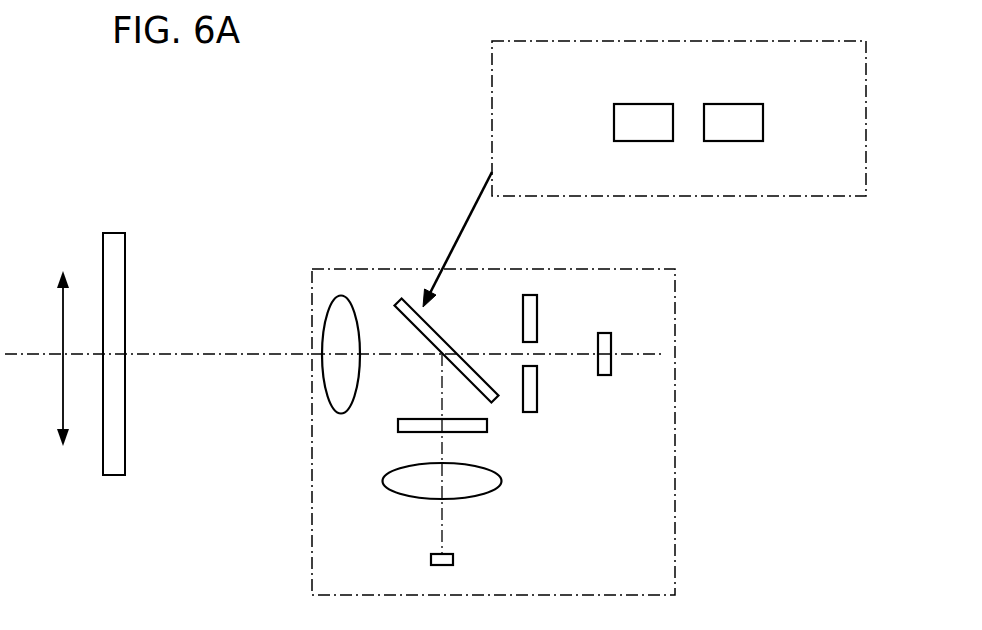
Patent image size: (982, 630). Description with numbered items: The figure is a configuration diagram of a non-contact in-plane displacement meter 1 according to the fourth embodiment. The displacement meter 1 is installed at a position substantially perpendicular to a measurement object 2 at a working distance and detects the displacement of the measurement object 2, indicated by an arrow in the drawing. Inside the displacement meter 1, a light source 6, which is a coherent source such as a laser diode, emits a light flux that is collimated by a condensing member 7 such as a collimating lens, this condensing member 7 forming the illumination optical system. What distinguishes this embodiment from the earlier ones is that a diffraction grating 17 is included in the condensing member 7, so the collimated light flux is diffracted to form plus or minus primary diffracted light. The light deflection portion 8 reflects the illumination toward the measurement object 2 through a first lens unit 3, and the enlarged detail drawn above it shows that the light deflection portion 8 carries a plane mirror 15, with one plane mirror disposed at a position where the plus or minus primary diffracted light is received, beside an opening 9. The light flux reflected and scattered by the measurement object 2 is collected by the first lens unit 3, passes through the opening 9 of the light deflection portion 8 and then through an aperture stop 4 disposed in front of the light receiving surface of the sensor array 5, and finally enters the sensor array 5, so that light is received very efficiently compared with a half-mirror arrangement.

The displacement meter 1 is at (676, 433).
The measurement object 2 is at (102, 253).
The first lens unit 3 is at (348, 297).
The aperture stop 4 is at (537, 307).
The sensor array 5 is at (602, 333).
The light source 6 is at (455, 557).
The condensing member 7 is at (501, 481).
The light deflection portion 8 is at (414, 310).
The opening 9 is at (690, 120).
The plane mirror 15 is at (645, 123).
The diffraction grating 17 is at (488, 425).